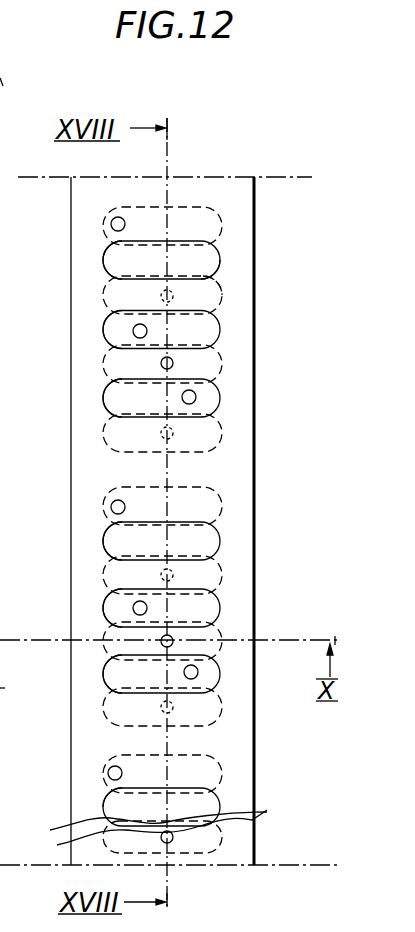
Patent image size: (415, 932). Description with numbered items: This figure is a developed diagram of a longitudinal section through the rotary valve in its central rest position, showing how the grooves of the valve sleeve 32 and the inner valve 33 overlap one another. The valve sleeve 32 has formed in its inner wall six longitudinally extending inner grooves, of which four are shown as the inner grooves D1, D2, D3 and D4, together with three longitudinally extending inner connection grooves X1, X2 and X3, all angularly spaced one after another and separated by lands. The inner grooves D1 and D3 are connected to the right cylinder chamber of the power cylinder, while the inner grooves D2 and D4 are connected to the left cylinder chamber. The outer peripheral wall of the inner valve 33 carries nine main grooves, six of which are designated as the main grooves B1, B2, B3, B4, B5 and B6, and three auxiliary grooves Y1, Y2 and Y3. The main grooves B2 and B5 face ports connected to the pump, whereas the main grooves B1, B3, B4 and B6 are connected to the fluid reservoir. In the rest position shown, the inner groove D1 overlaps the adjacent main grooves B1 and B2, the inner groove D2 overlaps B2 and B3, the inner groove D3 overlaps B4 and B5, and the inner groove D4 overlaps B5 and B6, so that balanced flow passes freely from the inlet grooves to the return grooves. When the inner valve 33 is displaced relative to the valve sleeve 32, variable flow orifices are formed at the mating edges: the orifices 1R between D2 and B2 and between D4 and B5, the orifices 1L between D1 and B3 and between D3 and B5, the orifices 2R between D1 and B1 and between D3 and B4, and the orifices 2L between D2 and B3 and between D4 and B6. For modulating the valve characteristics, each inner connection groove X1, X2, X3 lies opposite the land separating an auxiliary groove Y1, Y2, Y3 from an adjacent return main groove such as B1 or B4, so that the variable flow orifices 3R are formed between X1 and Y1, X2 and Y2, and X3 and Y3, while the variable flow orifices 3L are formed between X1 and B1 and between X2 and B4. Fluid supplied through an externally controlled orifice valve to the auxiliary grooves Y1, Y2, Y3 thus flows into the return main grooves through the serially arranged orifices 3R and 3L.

The variable flow orifice 3R is at (118, 243).
The variable flow orifice 3L is at (118, 279).
The variable flow orifice 2R is at (118, 312).
The variable flow orifice 1L is at (118, 348).
The variable flow orifice 1R is at (118, 380).
The variable flow orifice 2L is at (118, 416).
The auxiliary groove Y1 is at (222, 222).
The inner connection groove X1 is at (220, 256).
The valve sleeve 32 is at (218, 270).
The inner valve 33 is at (220, 293).
The main groove B1 is at (222, 313).
The inner groove D1 is at (220, 345).
The main groove B2 is at (222, 370).
The inner groove D2 is at (220, 412).
The main groove B3 is at (222, 436).
The auxiliary groove Y2 is at (222, 510).
The inner connection groove X2 is at (220, 545).
The main groove B4 is at (222, 577).
The inner groove D3 is at (220, 610).
The main groove B5 is at (222, 650).
The inner groove D4 is at (220, 685).
The main groove B6 is at (222, 715).
The auxiliary groove Y3 is at (222, 777).
The inner connection groove X3 is at (220, 806).